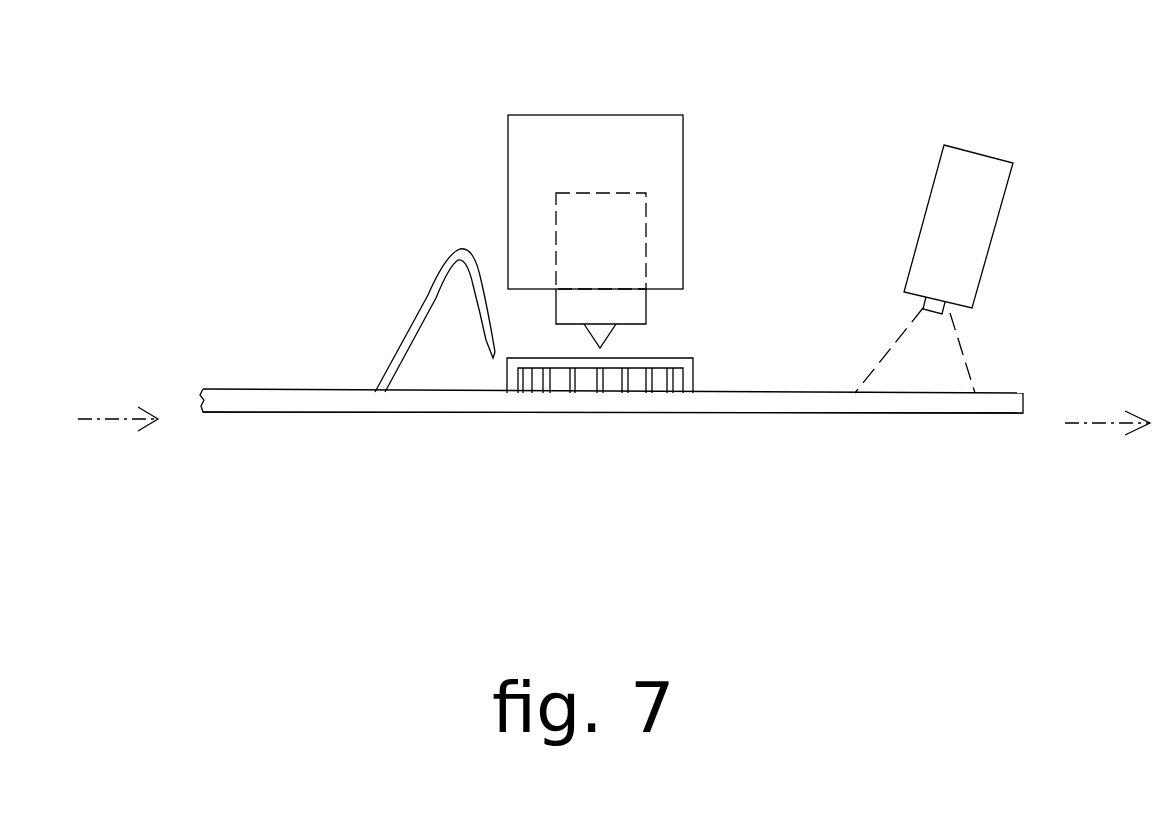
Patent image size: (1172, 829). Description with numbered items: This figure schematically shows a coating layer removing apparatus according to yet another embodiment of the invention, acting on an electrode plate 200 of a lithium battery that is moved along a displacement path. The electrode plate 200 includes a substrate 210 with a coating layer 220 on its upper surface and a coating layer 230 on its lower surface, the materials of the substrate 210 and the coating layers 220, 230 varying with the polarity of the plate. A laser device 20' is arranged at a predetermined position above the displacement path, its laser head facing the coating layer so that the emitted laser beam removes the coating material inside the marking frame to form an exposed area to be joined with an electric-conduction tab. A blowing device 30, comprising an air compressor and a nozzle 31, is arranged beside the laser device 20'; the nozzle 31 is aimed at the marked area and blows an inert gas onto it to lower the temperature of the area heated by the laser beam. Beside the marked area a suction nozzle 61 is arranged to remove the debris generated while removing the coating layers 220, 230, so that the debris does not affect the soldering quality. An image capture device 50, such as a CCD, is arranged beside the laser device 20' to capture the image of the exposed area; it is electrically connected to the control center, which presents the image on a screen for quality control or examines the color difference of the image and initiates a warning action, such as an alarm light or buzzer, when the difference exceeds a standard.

The laser device 20' is at (604, 175).
The blowing device 30 is at (369, 315).
The nozzle 31 is at (360, 302).
The suction nozzle 61 is at (693, 373).
The image capture device 50 is at (980, 220).
The electrode plate 200 is at (670, 427).
The substrate 210 is at (1022, 405).
The coating layer 220 is at (1010, 388).
The coating layer 230 is at (800, 413).